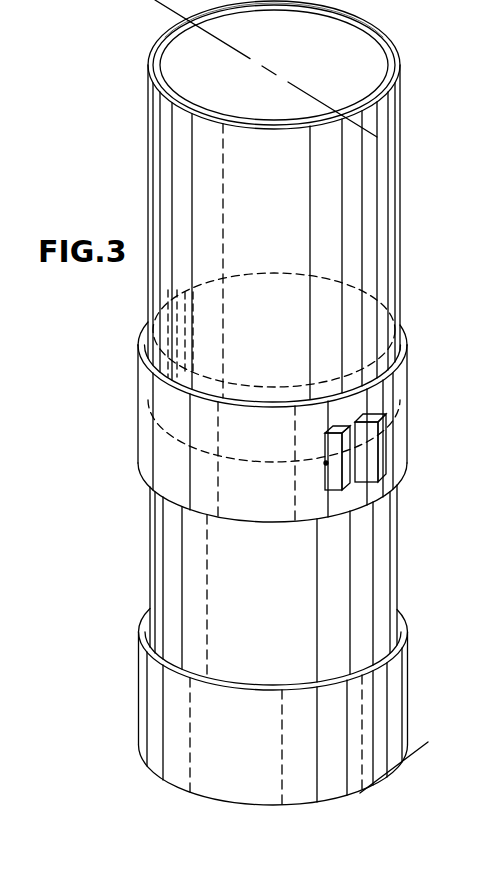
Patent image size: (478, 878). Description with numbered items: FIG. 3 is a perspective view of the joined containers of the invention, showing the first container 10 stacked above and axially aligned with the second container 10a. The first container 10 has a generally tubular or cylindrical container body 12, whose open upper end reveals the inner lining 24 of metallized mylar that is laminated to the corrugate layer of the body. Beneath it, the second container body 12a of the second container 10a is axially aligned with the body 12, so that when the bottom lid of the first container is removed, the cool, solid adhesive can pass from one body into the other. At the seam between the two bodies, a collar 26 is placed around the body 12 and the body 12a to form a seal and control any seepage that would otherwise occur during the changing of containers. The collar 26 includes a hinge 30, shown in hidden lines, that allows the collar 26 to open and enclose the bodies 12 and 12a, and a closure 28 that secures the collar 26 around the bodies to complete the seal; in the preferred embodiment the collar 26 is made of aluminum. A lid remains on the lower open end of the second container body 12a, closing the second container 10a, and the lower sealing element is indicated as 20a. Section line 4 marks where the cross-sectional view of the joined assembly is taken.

The section line 4- 4 is at (150, 13).
The container 10 is at (234, 231).
The container body 12 is at (147, 168).
The inner lining 24 is at (363, 41).
The hinge 30 is at (162, 299).
The collar 26 is at (405, 391).
The closure 28 is at (372, 455).
The second container 10a is at (251, 539).
The second container body 12a is at (157, 544).
The lower collar 20a is at (142, 694).